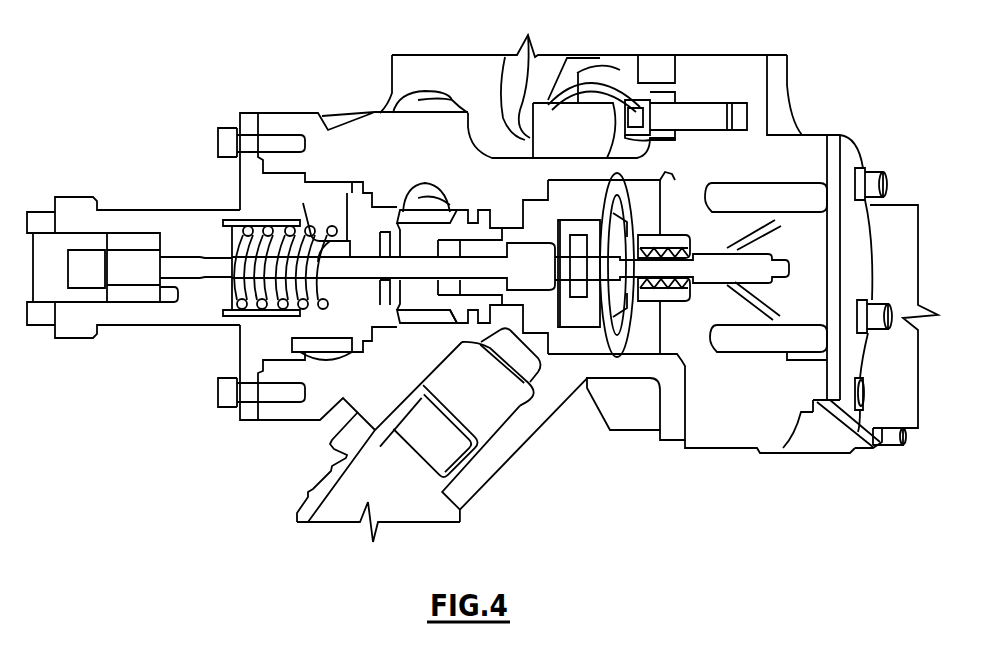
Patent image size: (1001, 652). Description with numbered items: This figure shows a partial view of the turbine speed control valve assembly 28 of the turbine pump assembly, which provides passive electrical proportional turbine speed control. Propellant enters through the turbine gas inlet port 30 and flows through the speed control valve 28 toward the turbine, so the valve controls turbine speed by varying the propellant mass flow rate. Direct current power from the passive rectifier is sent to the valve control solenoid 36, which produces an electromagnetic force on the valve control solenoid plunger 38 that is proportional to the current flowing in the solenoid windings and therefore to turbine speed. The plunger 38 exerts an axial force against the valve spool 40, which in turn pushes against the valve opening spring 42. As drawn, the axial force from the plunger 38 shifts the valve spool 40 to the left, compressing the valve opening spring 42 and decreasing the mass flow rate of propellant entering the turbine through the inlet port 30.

The speed control valve 28 is at (383, 131).
The turbine gas inlet port 30 is at (362, 489).
The valve control solenoid 36 is at (760, 193).
The valve control solenoid plunger 38 is at (780, 297).
The valve spool 40 is at (530, 267).
The valve opening spring 42 is at (232, 325).